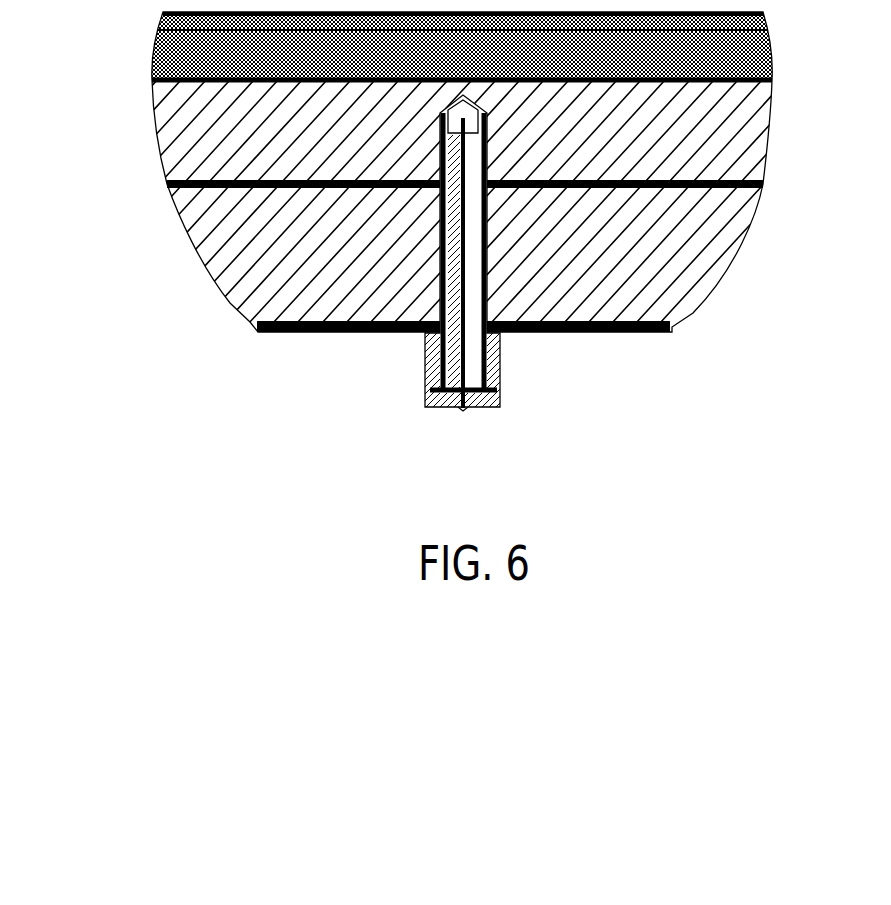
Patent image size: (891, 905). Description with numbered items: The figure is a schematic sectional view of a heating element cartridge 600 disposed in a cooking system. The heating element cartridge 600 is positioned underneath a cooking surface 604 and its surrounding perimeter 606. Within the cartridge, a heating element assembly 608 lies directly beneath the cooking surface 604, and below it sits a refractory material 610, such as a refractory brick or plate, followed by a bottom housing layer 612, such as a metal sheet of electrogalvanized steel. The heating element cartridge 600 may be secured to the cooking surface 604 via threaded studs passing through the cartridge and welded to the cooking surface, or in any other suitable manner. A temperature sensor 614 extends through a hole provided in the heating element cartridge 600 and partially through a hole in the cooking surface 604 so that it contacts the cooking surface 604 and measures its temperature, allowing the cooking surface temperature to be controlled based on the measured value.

The heating element cartridge 600 is at (147, 181).
The cooking surface 604 is at (770, 133).
The surrounding perimeter 606 is at (772, 55).
The heating element assembly 608 is at (763, 186).
The refractory material 610 is at (730, 257).
The bottom housing layer 612 is at (670, 333).
The temperature sensor 614 is at (485, 290).